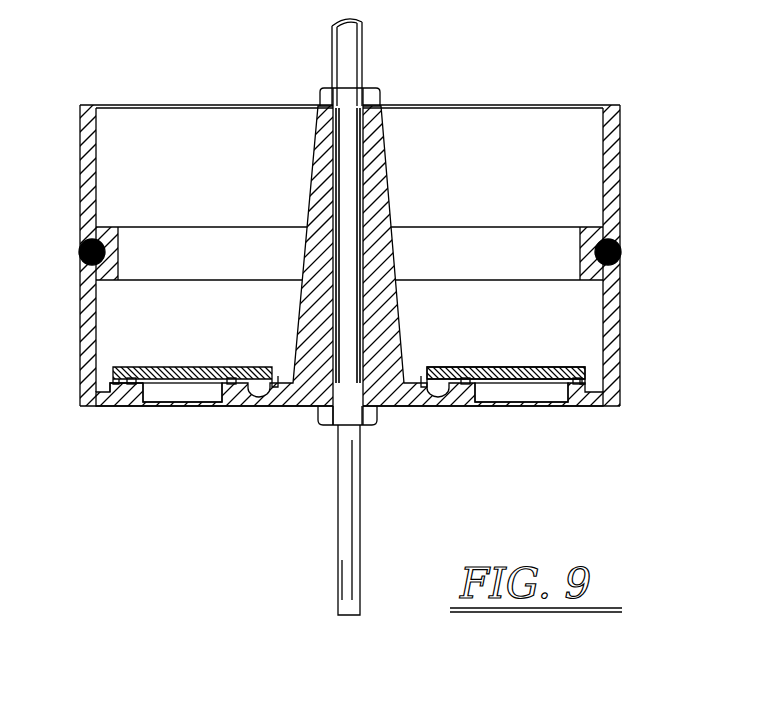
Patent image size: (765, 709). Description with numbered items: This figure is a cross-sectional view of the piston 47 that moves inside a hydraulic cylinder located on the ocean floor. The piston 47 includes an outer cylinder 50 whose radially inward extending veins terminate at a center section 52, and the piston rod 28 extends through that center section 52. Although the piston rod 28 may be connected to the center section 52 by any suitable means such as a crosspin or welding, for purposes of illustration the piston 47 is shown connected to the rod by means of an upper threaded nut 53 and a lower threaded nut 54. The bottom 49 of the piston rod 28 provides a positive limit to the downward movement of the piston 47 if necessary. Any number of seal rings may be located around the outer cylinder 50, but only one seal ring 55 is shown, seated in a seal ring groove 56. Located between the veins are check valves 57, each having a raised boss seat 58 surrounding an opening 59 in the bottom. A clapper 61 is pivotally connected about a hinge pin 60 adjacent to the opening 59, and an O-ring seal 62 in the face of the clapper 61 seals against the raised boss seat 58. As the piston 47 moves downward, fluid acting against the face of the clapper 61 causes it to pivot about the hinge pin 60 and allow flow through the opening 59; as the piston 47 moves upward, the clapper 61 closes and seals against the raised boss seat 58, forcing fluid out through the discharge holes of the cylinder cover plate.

The piston rod 28 is at (331, 42).
The piston 47 is at (627, 173).
The bottom of piston rod 49 is at (340, 614).
The outer cylinder 50 is at (80, 202).
The center section 52 is at (393, 178).
The upper threaded nut 53 is at (381, 92).
The lower threaded nut 54 is at (378, 418).
The seal ring 55 is at (79, 252).
The seal ring groove 56 is at (107, 238).
The check valve 57 is at (169, 422).
The raised boss seat 58 is at (130, 387).
The opening 59 is at (192, 398).
The hinge pin 60 is at (268, 373).
The clapper 61 is at (178, 368).
The O-ring seal 62 is at (117, 372).